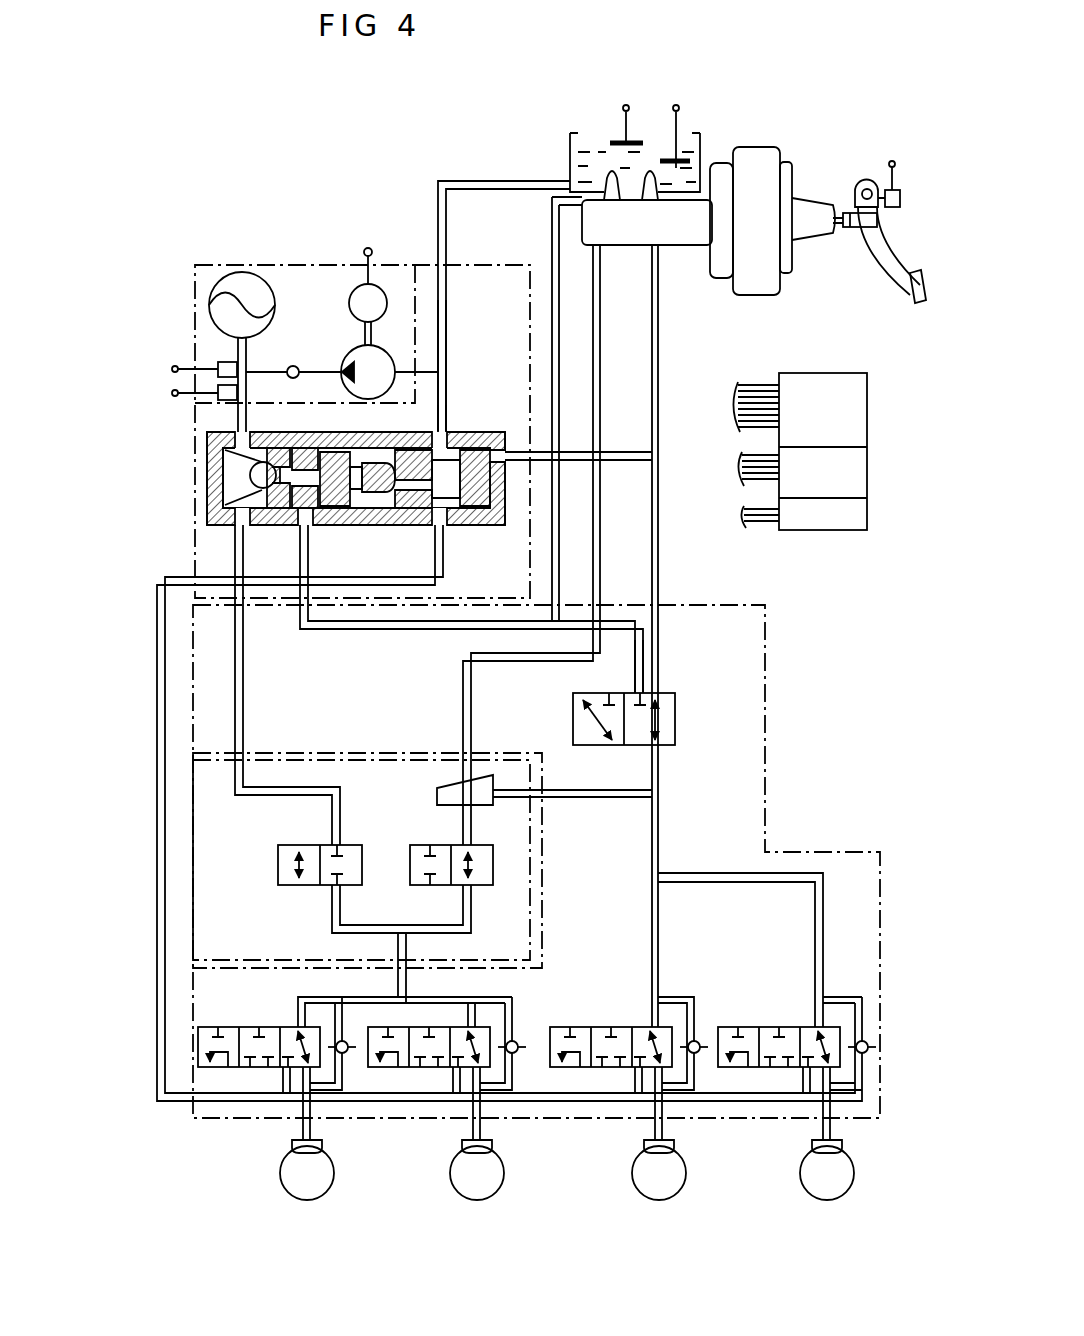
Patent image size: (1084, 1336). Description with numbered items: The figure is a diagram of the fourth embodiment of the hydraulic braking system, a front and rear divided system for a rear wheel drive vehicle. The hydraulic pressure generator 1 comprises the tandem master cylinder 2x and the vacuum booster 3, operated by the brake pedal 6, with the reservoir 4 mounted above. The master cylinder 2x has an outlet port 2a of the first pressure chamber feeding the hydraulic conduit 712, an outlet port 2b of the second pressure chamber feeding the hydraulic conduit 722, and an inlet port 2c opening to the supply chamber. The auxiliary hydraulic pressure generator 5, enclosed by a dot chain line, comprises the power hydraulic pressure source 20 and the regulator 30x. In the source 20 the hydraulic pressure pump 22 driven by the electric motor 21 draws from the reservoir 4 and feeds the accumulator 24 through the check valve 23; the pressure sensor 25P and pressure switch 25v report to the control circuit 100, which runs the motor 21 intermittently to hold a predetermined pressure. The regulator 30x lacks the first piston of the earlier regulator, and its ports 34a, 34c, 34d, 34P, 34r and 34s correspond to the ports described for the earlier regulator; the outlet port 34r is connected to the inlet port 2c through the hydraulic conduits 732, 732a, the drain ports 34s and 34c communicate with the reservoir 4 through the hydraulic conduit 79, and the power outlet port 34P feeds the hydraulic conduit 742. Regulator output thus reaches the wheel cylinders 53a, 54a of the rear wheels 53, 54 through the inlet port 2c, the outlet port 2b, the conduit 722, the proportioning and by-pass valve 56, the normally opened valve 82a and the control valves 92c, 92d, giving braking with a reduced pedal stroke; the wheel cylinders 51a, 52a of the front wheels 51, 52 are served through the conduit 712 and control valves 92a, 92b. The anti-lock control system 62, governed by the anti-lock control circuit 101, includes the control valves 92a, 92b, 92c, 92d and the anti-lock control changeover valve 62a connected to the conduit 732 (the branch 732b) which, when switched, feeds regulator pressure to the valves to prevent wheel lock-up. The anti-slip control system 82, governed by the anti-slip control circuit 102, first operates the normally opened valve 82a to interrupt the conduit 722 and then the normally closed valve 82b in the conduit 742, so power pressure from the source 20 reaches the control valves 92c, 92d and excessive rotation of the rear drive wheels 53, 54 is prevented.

The hydraulic pressure generator 1 is at (797, 280).
The outlet port 2a is at (660, 247).
The outlet port 2b is at (600, 247).
The inlet port 2c is at (585, 201).
The tandem master cylinder 2x is at (695, 248).
The vacuum booster 3 is at (756, 272).
The reservoir 4 is at (570, 152).
The auxiliary hydraulic pressure generator 5 is at (448, 263).
The brake pedal 6 is at (880, 278).
The power hydraulic pressure source 20 is at (300, 265).
The electric motor 21 is at (349, 300).
The hydraulic pressure pump 22 is at (349, 355).
The check valve 23 is at (293, 366).
The accumulator 24 is at (276, 308).
The pressure sensor 25P is at (218, 362).
The pressure switch 25v is at (218, 389).
The regulator 30x is at (207, 478).
The port 34a is at (505, 448).
The drain port 34c is at (432, 434).
The port 34d is at (250, 433).
The power hydraulic pressure outlet port 34P is at (250, 526).
The outlet port 34r is at (313, 526).
The drain port 34s is at (447, 526).
The proportioning and by-pass valve 56 is at (437, 792).
The anti-lock control system 62 is at (766, 790).
The anti-lock control changeover valve 62a is at (676, 722).
The hydraulic conduit 79 is at (157, 900).
The anti-slip control system 82 is at (192, 815).
The normally opened valve 82a is at (410, 856).
The normally closed valve 82b is at (278, 852).
The control valve 92a is at (742, 1027).
The control valve 92b is at (562, 1027).
The control valve 92c is at (442, 1027).
The control valve 92d is at (232, 1027).
The control circuit 100 is at (838, 410).
The anti-lock control circuit 101 is at (836, 470).
The anti-slip control circuit 102 is at (845, 520).
The front wheel 51 is at (854, 1173).
The wheel cylinder 51a is at (842, 1143).
The front wheel 52 is at (686, 1173).
The wheel cylinder 52a is at (677, 1143).
The rear wheel 53 is at (504, 1173).
The wheel cylinder 53a is at (492, 1145).
The rear wheel 54 is at (334, 1173).
The wheel cylinder 54a is at (322, 1145).
The hydraulic conduit 712 is at (659, 566).
The hydraulic conduit 722 is at (600, 552).
The hydraulic conduit 732 is at (358, 630).
The hydraulic conduit 732a is at (530, 328).
The branch conduit 732b is at (635, 676).
The hydraulic conduit 742 is at (245, 706).